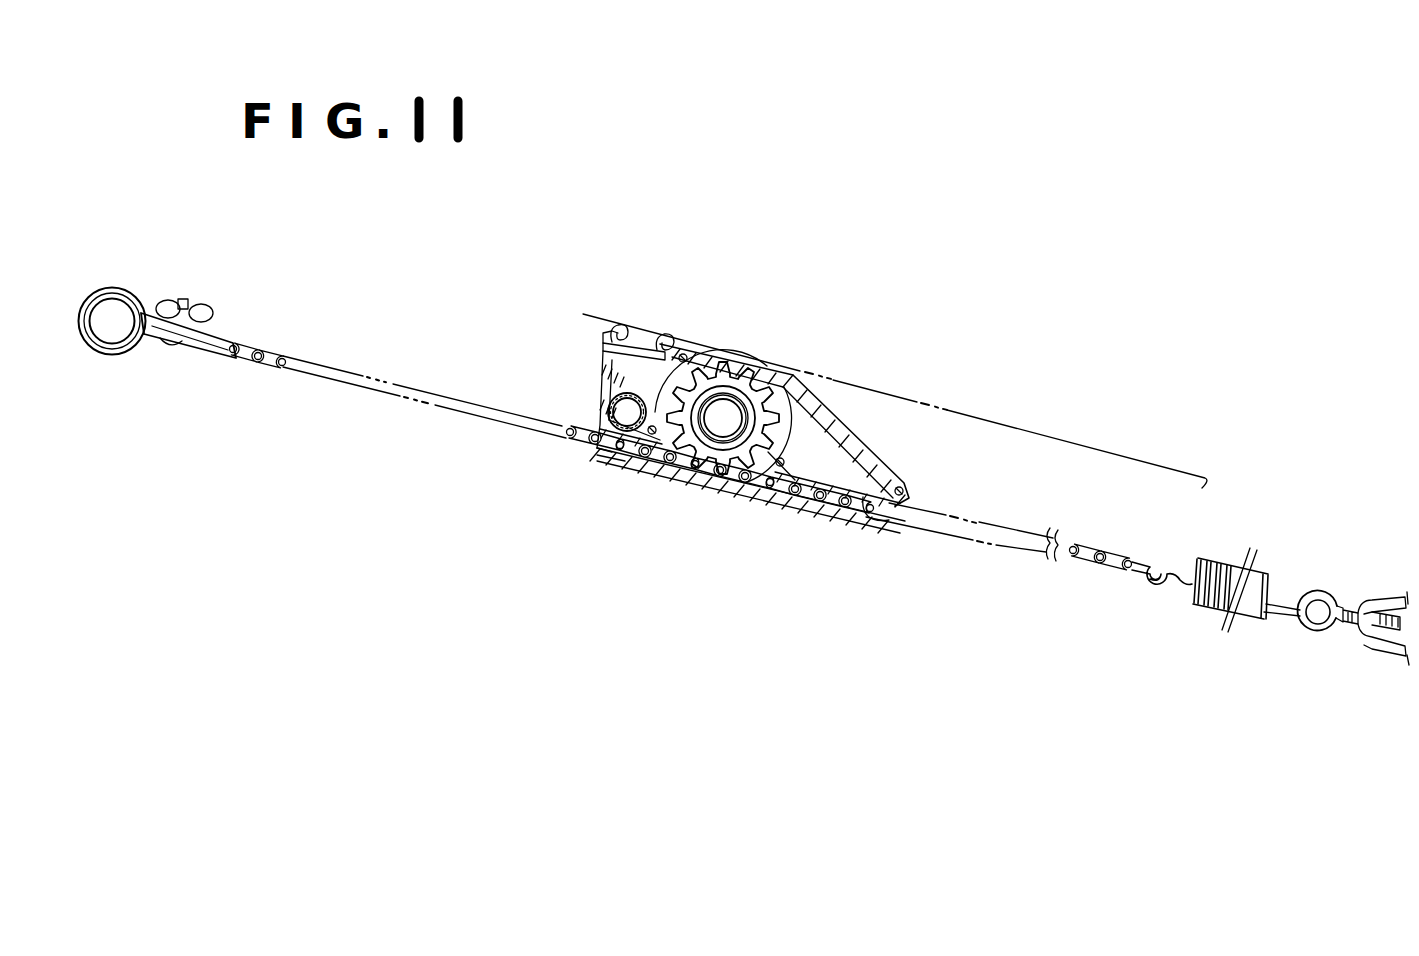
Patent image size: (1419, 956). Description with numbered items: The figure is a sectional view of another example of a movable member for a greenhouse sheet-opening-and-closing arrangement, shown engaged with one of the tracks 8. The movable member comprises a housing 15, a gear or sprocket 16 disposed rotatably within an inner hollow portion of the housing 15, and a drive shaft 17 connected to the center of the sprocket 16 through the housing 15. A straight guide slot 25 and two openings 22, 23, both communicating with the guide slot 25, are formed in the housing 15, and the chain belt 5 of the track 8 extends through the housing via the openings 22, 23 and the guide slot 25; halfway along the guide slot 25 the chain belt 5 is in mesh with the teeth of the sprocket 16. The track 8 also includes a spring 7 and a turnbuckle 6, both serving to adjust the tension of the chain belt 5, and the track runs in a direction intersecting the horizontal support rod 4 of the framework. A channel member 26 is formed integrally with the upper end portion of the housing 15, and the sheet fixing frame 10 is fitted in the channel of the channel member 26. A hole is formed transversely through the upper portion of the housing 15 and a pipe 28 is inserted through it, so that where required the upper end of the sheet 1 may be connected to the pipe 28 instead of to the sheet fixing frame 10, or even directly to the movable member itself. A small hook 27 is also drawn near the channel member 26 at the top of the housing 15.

The sheet 1 is at (971, 407).
The horizontal support rod 4 is at (130, 292).
The chain belt 5 is at (1125, 553).
The turnbuckle 6 is at (1368, 600).
The spring 7 is at (1256, 558).
The track 8 is at (462, 399).
The sheet fixing frame 10 is at (662, 337).
The housing 15 is at (832, 418).
The sprocket 16 is at (776, 370).
The drive shaft 17 is at (738, 362).
The opening 22 is at (898, 521).
The opening 23 is at (612, 456).
The guide slot 25 is at (870, 524).
The channel member 26 is at (610, 338).
The hook 27 is at (626, 330).
The pipe 28 is at (608, 405).